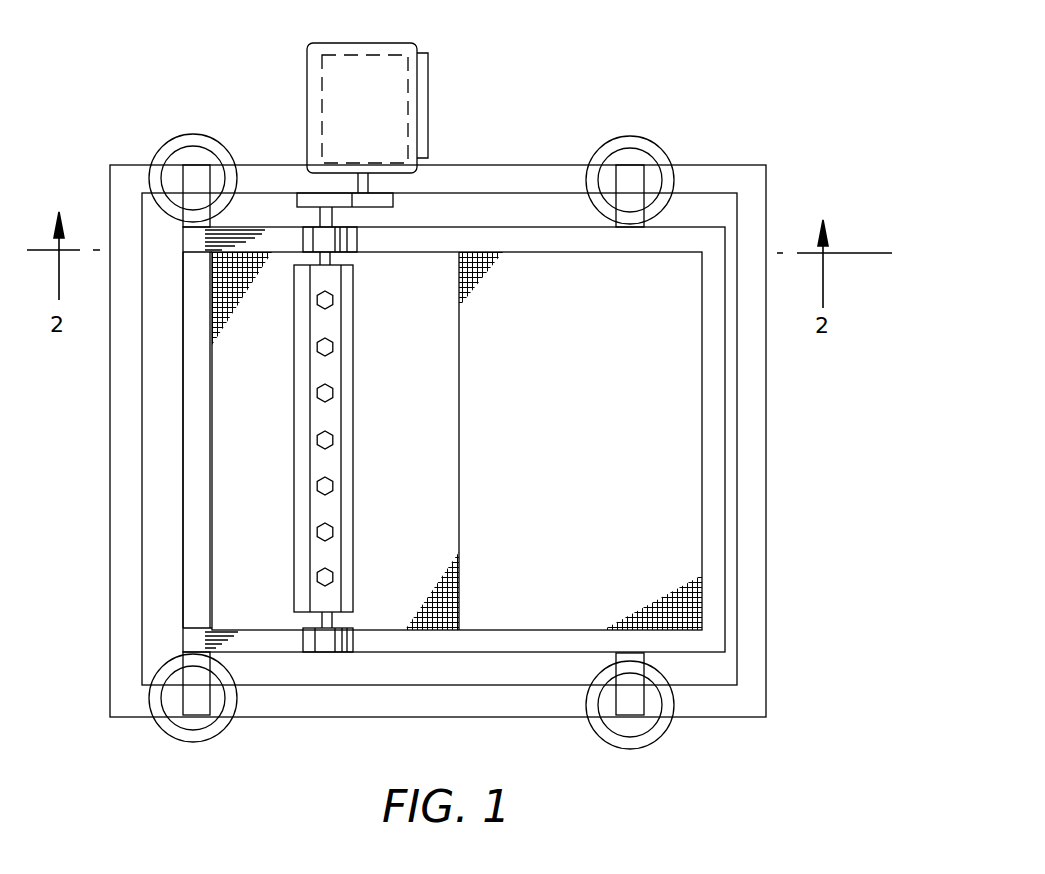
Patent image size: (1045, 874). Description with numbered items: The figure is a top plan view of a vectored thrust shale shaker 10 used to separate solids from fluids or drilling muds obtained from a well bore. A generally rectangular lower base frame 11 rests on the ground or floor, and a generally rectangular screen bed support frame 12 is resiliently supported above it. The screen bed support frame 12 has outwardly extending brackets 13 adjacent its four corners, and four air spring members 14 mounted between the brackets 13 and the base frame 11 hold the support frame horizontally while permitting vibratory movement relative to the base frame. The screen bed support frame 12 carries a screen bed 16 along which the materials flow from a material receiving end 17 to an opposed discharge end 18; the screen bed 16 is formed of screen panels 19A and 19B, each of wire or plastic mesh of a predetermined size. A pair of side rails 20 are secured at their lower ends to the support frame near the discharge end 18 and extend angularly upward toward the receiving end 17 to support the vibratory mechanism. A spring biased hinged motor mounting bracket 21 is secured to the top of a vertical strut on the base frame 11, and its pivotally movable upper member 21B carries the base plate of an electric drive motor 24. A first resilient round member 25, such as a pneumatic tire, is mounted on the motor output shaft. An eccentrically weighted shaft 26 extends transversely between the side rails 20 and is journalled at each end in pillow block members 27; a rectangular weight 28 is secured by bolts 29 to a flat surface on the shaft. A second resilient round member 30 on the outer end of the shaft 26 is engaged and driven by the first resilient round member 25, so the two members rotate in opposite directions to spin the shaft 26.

The vectored thrust shale shaker 10 is at (800, 460).
The lower base frame 11 is at (767, 577).
The screen bed support frame 12 is at (715, 478).
The brackets 13 is at (190, 178).
The air spring members 14 is at (188, 138).
The screen bed 16 is at (685, 454).
The material receiving end 17 is at (685, 530).
The discharge end 18 is at (228, 473).
The screen panel 19A is at (420, 444).
The screen panel 19B is at (572, 437).
The side rails 20 is at (255, 237).
The spring biased hinged motor mounting bracket 21 is at (440, 82).
The upper member 21B is at (427, 127).
The electric drive motor 24 is at (367, 129).
The first resilient round member 25 is at (392, 200).
The eccentrically weighted shaft 26 is at (355, 378).
The pillow block members 27 is at (340, 245).
The rectangular weight 28 is at (335, 508).
The bolts 29 is at (340, 567).
The second resilient round member 30 is at (303, 197).